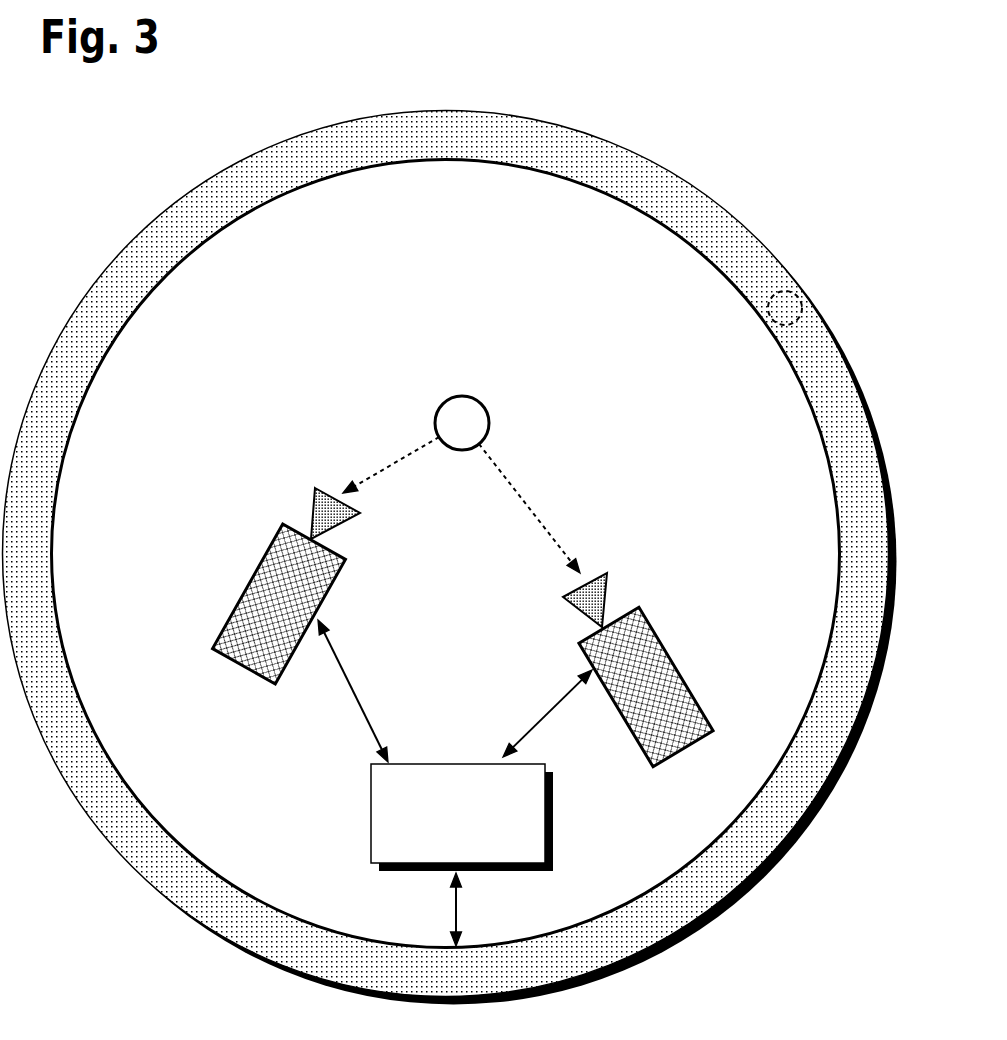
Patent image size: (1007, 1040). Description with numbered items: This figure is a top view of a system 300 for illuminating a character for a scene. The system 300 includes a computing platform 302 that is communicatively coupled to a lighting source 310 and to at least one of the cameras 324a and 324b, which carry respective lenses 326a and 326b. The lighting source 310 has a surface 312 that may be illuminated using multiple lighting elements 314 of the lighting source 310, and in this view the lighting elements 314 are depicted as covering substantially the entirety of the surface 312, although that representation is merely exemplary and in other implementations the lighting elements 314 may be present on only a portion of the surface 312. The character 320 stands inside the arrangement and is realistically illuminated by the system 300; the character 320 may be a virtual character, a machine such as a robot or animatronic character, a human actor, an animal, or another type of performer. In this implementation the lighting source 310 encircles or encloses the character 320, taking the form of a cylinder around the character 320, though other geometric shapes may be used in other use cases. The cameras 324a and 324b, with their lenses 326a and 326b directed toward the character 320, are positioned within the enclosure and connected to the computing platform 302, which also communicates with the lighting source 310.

The system 300 is at (450, 535).
The computing platform 302 is at (508, 872).
The lighting source 310 is at (467, 168).
The surface 312 is at (840, 592).
The lighting elements 314 is at (803, 308).
The character 320 is at (465, 397).
The camera 324a is at (287, 673).
The camera 324b is at (680, 757).
The lens 326a is at (312, 510).
The lens 326b is at (614, 594).